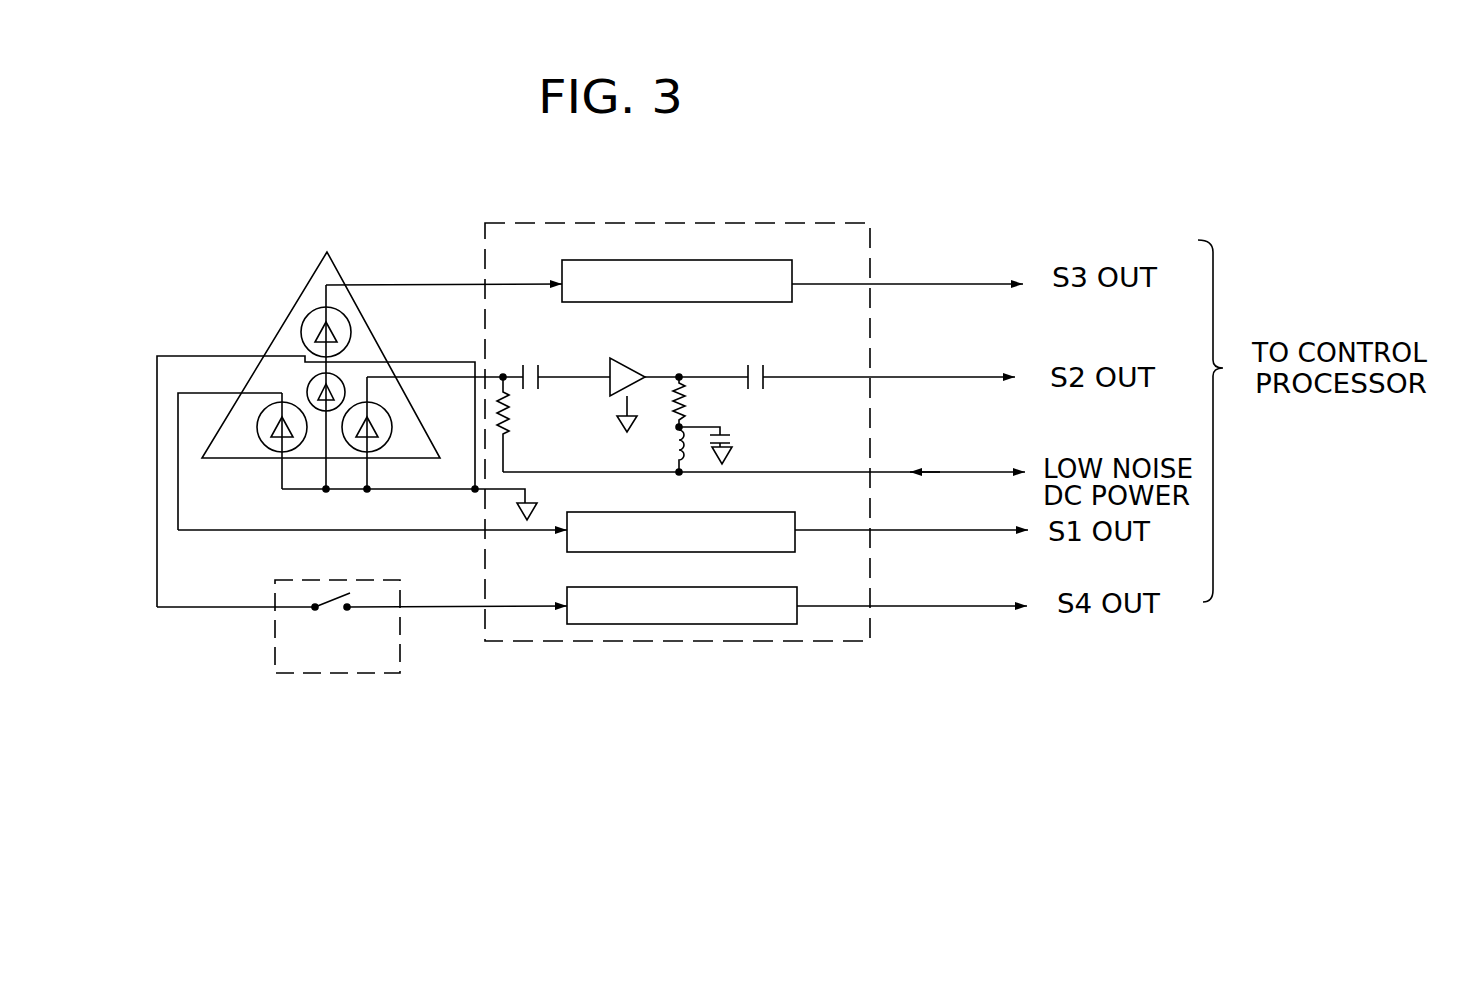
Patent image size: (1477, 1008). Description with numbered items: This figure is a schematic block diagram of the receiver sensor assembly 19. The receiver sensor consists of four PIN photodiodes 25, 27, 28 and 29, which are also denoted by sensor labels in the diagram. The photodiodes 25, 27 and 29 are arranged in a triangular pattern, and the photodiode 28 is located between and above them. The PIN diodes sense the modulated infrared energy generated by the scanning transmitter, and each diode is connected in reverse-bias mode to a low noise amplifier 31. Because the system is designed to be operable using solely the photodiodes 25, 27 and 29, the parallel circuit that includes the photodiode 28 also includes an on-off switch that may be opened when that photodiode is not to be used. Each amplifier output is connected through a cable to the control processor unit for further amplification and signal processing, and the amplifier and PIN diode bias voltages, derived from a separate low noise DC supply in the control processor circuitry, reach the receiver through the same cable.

The sensor detector assembly 19 is at (460, 710).
The PIN photodiode 25 is at (258, 427).
The PIN photodiode 27 is at (388, 428).
The PIN photodiode 28 is at (340, 384).
The PIN photodiode 29 is at (305, 327).
The low noise amplifier 31 is at (740, 643).